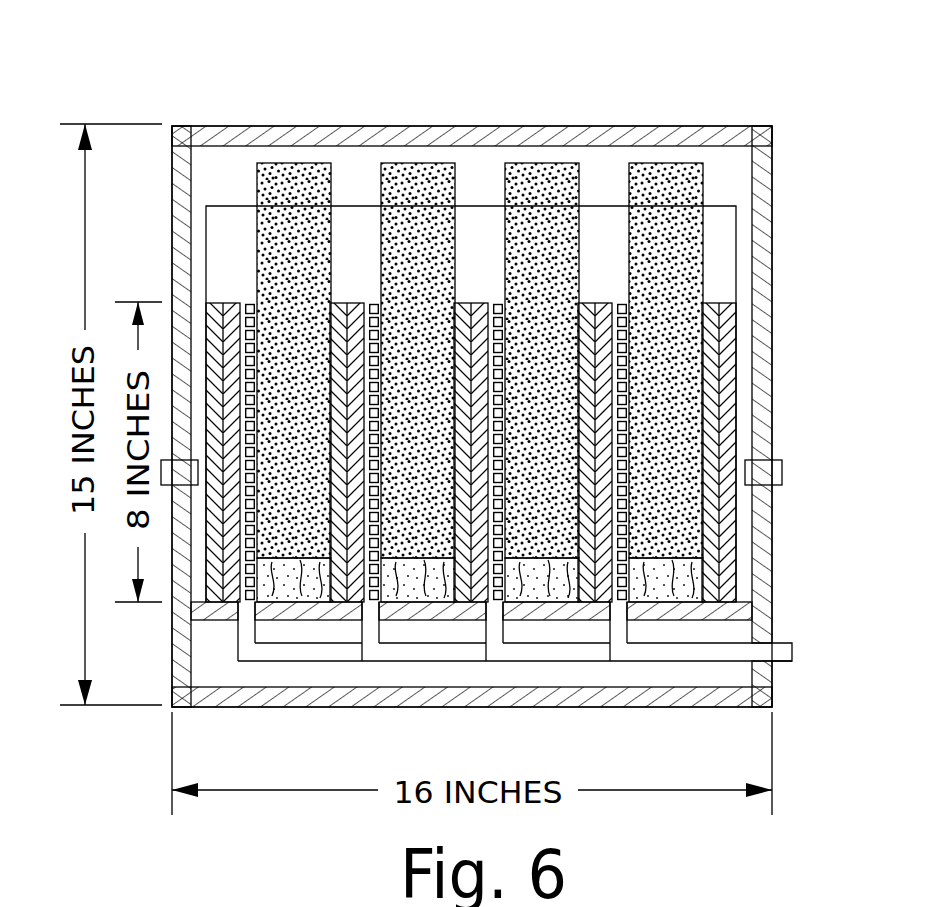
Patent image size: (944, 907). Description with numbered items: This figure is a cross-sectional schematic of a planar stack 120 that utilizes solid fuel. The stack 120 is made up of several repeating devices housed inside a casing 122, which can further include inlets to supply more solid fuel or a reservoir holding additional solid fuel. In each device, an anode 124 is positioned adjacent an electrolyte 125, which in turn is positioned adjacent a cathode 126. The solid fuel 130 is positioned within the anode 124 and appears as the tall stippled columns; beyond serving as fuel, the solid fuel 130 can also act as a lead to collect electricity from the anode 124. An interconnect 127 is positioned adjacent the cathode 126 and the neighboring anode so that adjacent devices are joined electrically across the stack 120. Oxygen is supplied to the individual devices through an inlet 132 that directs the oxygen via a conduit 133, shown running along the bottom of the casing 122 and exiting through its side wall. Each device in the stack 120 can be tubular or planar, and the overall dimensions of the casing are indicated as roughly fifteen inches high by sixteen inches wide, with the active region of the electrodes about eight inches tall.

The stack 120 is at (470, 393).
The casing 122 is at (358, 127).
The anode 124 is at (283, 583).
The electrolyte 125 is at (339, 595).
The cathode 126 is at (490, 602).
The interconnect 127 is at (632, 604).
The solid fuel 130 is at (540, 163).
The inlet 132 is at (792, 653).
The conduit 133 is at (680, 650).